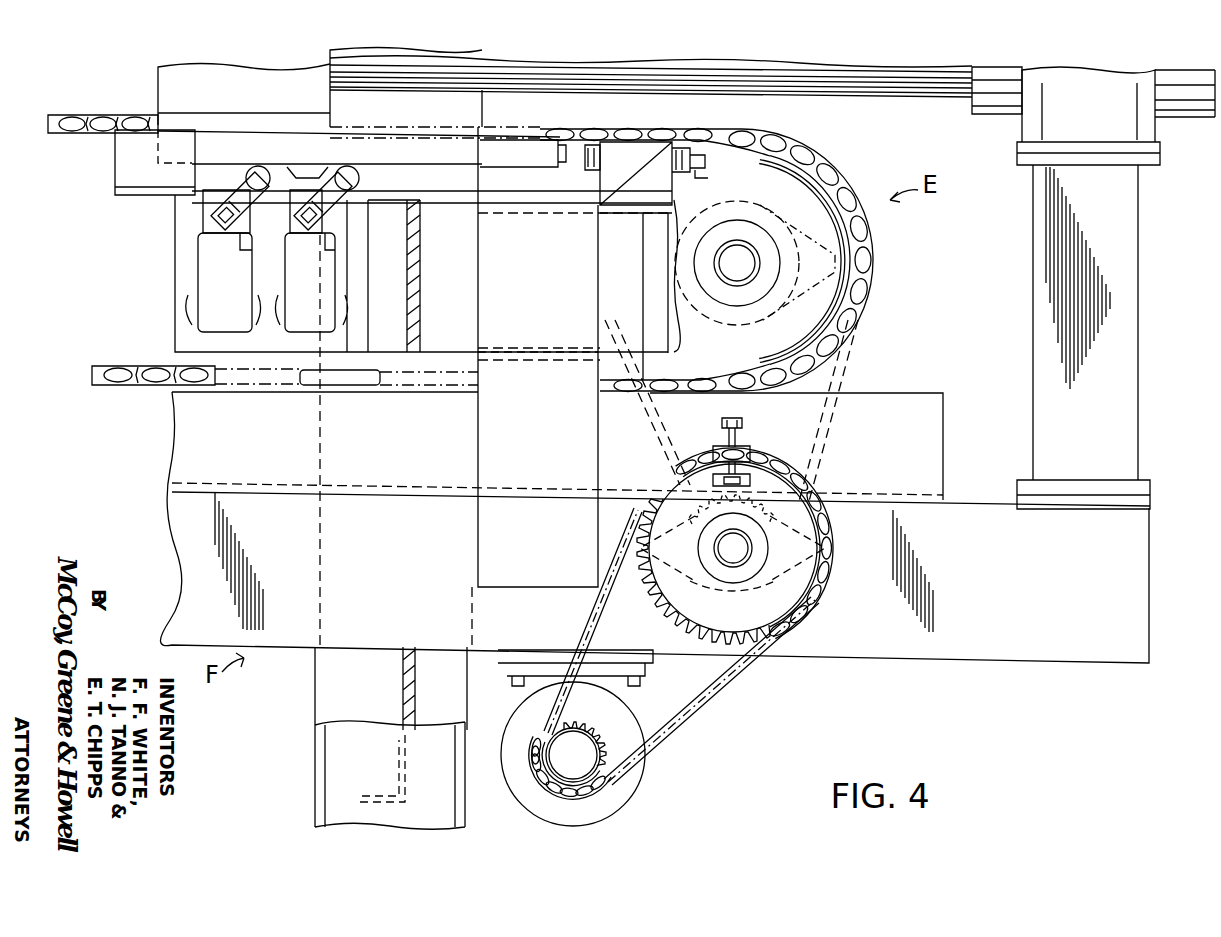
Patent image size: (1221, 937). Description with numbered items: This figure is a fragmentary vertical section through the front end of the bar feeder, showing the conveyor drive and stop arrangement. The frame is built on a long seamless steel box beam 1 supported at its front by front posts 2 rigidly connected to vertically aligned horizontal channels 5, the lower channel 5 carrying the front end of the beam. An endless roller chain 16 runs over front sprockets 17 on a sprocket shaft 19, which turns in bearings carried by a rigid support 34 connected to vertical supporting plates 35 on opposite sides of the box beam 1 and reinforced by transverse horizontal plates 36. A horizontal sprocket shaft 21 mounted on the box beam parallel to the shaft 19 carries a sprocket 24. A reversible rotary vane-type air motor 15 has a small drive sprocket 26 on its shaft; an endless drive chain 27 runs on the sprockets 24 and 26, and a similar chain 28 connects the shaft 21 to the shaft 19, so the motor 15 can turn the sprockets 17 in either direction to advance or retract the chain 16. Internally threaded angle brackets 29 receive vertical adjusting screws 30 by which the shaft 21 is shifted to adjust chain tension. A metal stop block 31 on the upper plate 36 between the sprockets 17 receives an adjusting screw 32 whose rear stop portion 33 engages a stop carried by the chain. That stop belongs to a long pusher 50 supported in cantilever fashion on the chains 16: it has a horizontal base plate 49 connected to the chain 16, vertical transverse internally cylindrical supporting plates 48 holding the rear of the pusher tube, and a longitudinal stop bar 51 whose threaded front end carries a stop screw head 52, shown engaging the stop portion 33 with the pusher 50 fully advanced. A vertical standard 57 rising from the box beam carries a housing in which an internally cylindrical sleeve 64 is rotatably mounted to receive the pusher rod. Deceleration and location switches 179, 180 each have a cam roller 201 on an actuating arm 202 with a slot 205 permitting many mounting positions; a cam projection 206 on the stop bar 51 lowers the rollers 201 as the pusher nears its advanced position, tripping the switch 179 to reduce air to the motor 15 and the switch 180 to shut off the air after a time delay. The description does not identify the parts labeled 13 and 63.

The box beam 1 is at (1040, 665).
The front posts 2 is at (482, 115).
The horizontal channels 5 is at (420, 290).
The conveyor block 13 is at (142, 196).
The air motor 15 is at (637, 780).
The conveyor chain 16 is at (104, 125).
The front sprockets 17 is at (808, 188).
The sprocket shaft 19 is at (728, 274).
The horizontal sprocket shaft 21 is at (737, 554).
The sprocket 24 is at (685, 622).
The small drive sprocket 26 is at (590, 730).
The endless drive chain 27 is at (712, 690).
The chain 28 is at (845, 382).
The angle brackets 29 is at (720, 455).
The vertical adjusting screws 30 is at (745, 425).
The stop block 31 is at (617, 155).
The adjusting screw 32 is at (712, 172).
The rear stop portion 33 is at (590, 168).
The rigid support 34 is at (770, 322).
The vertical supporting plates 35 is at (598, 462).
The transverse horizontal plates 36 is at (535, 218).
The supporting plates 48 is at (228, 75).
The base plate 49 is at (221, 118).
The pusher 50 is at (868, 98).
The stop bar 51 is at (287, 138).
The head 52 is at (556, 155).
The vertical standard 57 is at (1135, 302).
The bearing block 63 is at (1025, 125).
The sleeve 64 is at (978, 100).
The switch 179 is at (198, 270).
The switch 180 is at (298, 325).
The cam roller 201 is at (262, 168).
The actuating arm 202 is at (242, 190).
The slot 205 is at (210, 218).
The cam projection 206 is at (290, 165).